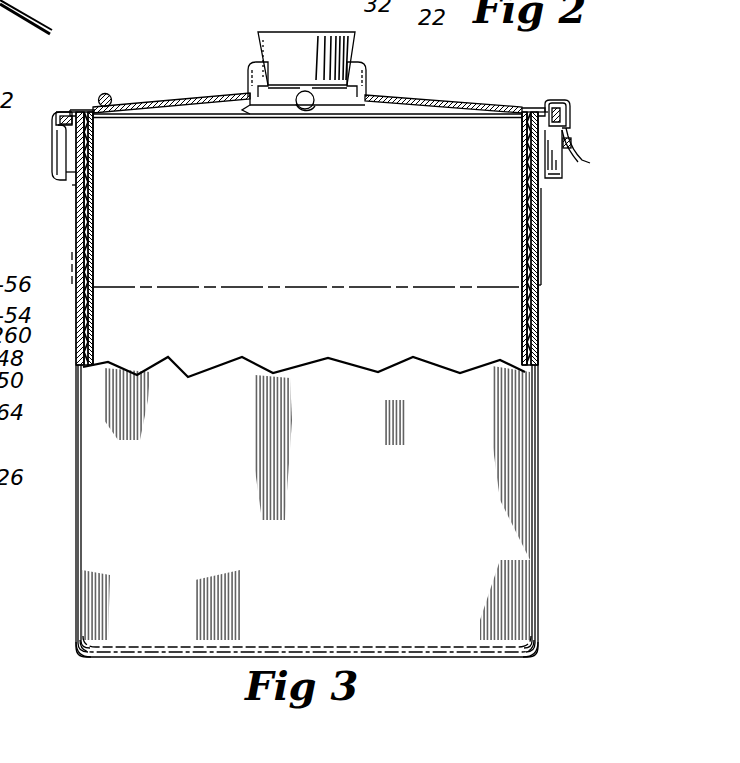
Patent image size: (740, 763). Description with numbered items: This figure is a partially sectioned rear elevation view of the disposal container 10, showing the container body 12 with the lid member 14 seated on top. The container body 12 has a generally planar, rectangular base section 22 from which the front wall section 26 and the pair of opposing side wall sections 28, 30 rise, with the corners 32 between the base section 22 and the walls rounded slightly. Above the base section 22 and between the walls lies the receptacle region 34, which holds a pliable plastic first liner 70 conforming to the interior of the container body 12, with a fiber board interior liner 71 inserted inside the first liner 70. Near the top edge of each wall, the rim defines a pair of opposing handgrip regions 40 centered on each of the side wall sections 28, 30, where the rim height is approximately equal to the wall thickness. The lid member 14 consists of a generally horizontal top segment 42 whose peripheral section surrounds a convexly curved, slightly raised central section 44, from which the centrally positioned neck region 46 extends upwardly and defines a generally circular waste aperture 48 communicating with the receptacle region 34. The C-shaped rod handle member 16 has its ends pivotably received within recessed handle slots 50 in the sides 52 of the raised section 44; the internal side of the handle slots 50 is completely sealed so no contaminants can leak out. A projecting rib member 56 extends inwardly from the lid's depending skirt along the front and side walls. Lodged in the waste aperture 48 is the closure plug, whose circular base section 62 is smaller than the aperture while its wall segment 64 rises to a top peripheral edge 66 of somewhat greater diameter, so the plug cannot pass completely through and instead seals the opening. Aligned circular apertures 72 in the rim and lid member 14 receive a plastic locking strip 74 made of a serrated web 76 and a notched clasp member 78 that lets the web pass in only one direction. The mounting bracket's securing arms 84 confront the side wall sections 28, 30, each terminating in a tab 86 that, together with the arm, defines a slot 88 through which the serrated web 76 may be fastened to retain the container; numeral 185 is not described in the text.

The disposal container 10 is at (168, 70).
The container body 12 is at (548, 294).
The lid member 14 is at (145, 90).
The handle member 16 is at (114, 80).
The base section 22 is at (498, 657).
The front wall section 26 is at (334, 419).
The side wall section 28 is at (538, 313).
The side wall section 30 is at (76, 437).
The corners 32 is at (78, 657).
The receptacle region 34 is at (378, 148).
The handgrip regions 40 is at (66, 110).
The top segment 42 is at (94, 110).
The raised central section 44 is at (452, 100).
The neck region 46 is at (372, 62).
The waste aperture 48 is at (266, 62).
The handle slots 50 is at (298, 108).
The sides 52 is at (248, 108).
The projecting rib member 56 is at (64, 176).
The base section 62 is at (334, 88).
The wall segment 64 is at (262, 32).
The top peripheral edge 66 is at (322, 34).
The first liner 70 is at (84, 222).
The interior liner 71 is at (93, 217).
The circular aperture 72 is at (548, 108).
The locking strip 74 is at (565, 102).
The serrated web 76 is at (579, 163).
The notched clasp member 78 is at (572, 143).
The securing arms 84 is at (72, 243).
The tab 86 is at (58, 123).
The slot 88 is at (54, 144).
The latch tab 185 is at (62, 193).